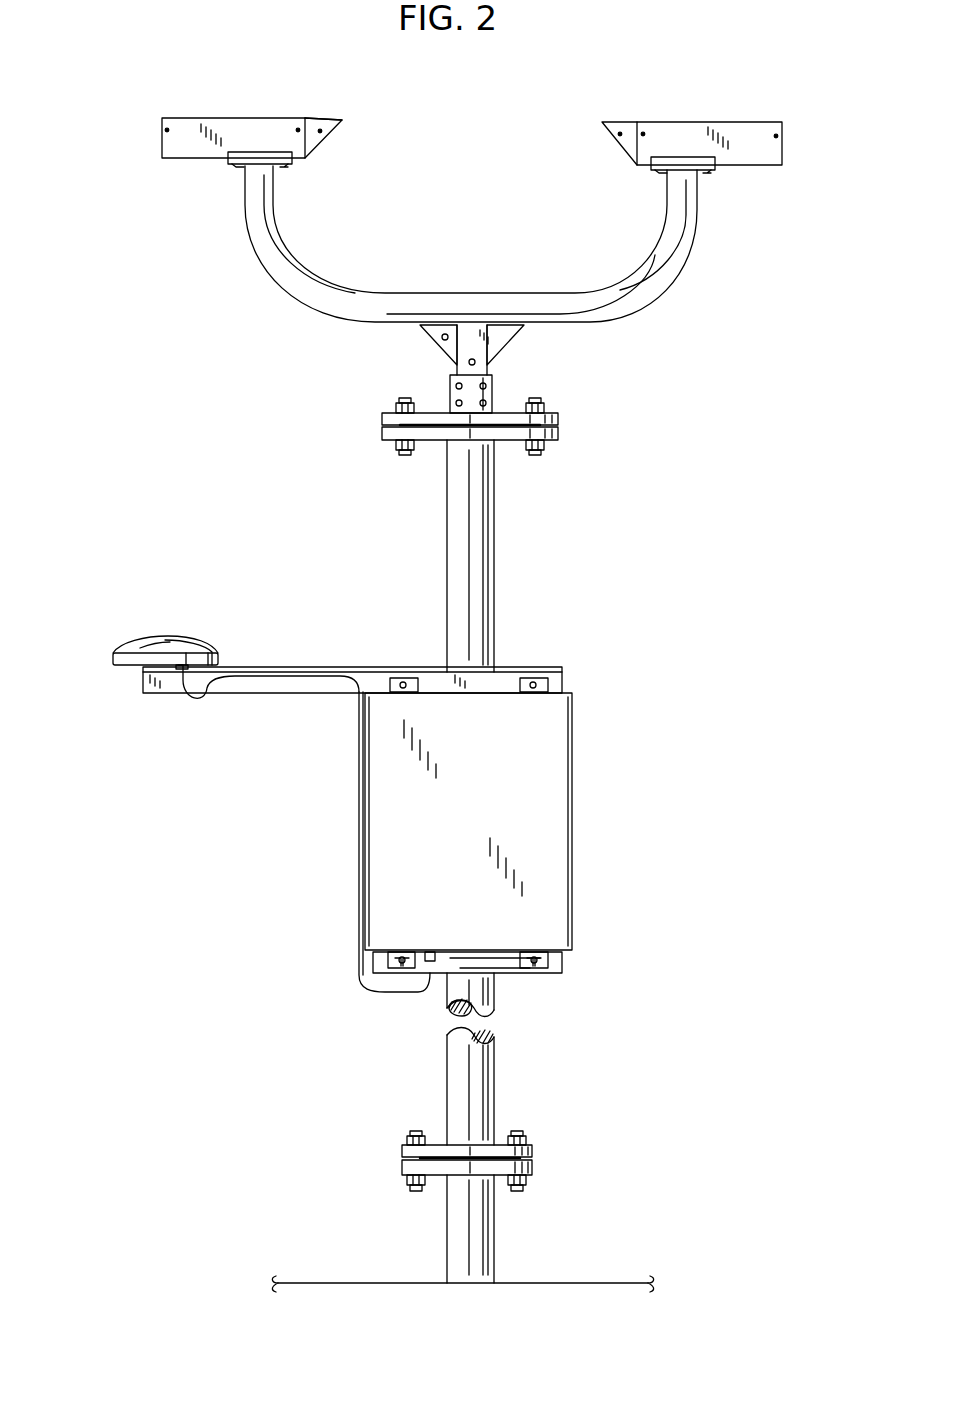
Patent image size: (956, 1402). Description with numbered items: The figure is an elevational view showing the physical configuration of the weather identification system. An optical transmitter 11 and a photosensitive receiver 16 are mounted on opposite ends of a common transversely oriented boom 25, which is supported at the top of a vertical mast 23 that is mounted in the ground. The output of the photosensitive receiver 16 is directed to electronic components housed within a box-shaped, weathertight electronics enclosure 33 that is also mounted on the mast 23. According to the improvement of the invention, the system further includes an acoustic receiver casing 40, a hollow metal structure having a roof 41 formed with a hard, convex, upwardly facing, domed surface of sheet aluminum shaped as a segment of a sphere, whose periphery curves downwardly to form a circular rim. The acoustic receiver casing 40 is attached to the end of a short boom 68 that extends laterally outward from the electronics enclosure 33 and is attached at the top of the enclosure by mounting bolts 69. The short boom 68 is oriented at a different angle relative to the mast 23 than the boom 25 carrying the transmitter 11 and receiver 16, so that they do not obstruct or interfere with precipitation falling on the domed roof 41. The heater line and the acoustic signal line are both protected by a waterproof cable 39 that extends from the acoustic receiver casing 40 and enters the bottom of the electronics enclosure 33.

The optical transmitter 11 is at (212, 112).
The photosensitive receiver 16 is at (720, 118).
The boom 25 is at (312, 285).
The mast 23 is at (473, 535).
The acoustic receiver casing 40 is at (198, 636).
The roof 41 is at (142, 645).
The mounting bolts 69 is at (408, 678).
The short boom 68 is at (265, 684).
The waterproof cable 39 is at (358, 840).
The electronics enclosure 33 is at (548, 840).